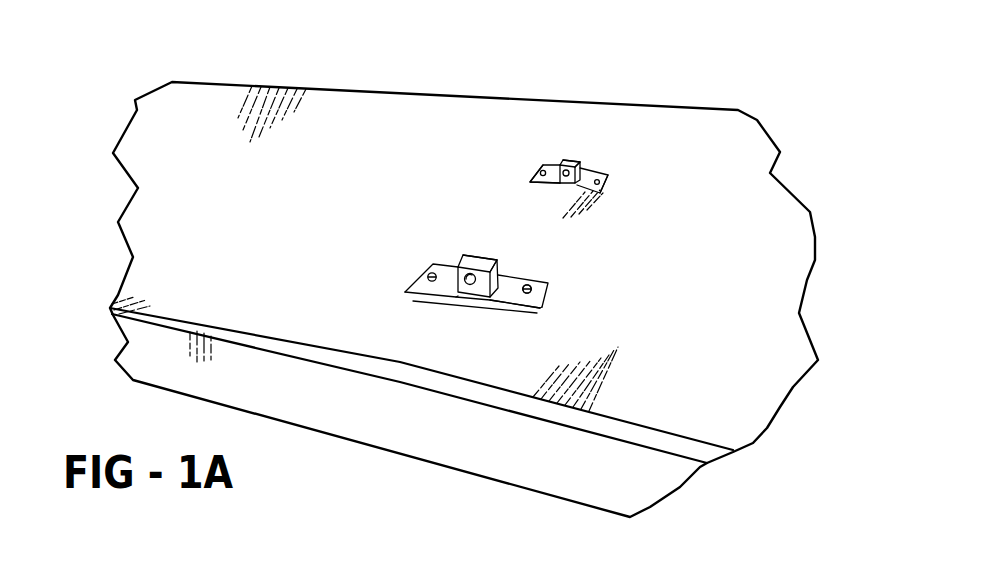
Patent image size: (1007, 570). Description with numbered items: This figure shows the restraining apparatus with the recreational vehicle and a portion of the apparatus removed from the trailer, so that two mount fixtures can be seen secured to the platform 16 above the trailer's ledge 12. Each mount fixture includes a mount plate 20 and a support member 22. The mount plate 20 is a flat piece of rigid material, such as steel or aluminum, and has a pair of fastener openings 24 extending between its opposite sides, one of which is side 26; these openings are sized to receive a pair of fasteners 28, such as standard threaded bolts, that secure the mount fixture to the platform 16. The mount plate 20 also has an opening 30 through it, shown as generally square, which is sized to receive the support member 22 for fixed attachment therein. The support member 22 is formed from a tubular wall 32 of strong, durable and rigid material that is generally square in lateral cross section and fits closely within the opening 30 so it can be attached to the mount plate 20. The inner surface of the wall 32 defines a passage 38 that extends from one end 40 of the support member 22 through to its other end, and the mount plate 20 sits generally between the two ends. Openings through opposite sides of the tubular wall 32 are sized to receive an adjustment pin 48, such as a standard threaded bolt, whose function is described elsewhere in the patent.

The support ledge 12 is at (376, 413).
The platform 16 is at (453, 103).
The mount plate 20 is at (553, 282).
The support member 22 is at (499, 257).
The fastener openings 24 is at (407, 292).
The side of the mount plate 26 is at (527, 293).
The fasteners 28 is at (431, 273).
The opening 30 is at (458, 296).
The tubular wall 32 is at (500, 289).
The passage 38 is at (458, 263).
The end of the support member 40 is at (483, 255).
The adjustment pin 48 is at (410, 295).